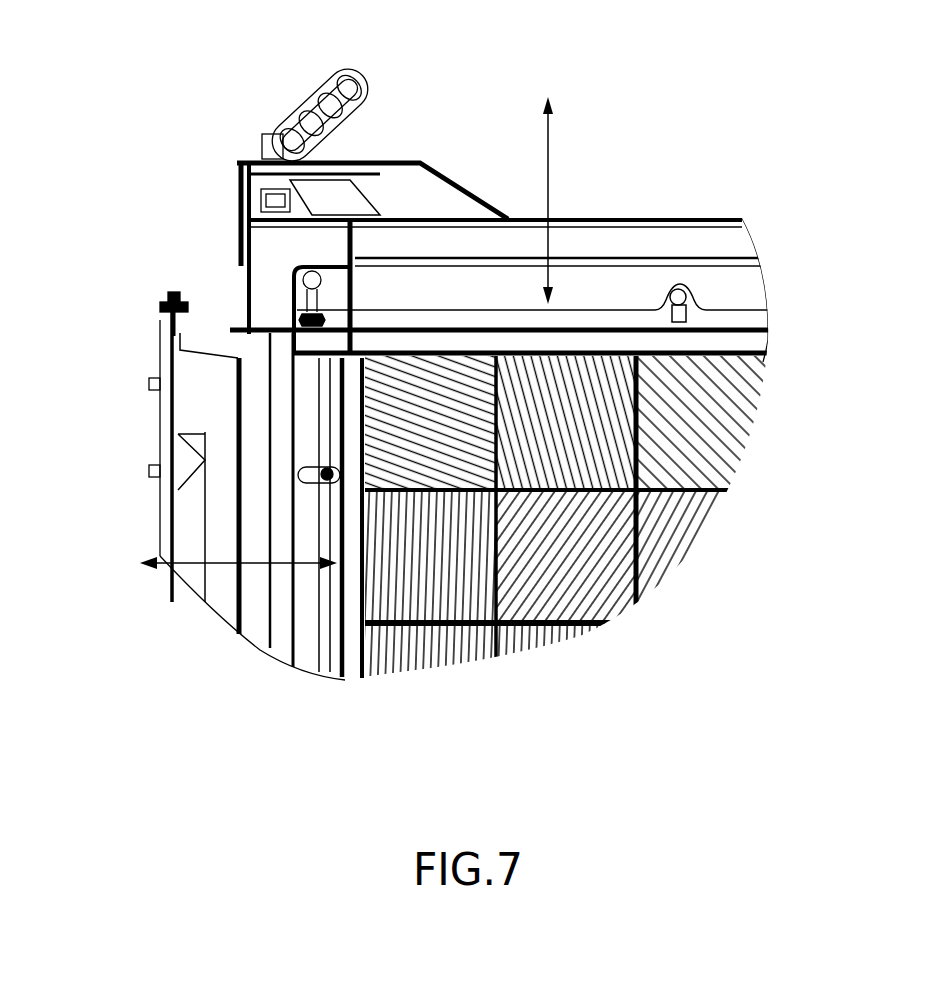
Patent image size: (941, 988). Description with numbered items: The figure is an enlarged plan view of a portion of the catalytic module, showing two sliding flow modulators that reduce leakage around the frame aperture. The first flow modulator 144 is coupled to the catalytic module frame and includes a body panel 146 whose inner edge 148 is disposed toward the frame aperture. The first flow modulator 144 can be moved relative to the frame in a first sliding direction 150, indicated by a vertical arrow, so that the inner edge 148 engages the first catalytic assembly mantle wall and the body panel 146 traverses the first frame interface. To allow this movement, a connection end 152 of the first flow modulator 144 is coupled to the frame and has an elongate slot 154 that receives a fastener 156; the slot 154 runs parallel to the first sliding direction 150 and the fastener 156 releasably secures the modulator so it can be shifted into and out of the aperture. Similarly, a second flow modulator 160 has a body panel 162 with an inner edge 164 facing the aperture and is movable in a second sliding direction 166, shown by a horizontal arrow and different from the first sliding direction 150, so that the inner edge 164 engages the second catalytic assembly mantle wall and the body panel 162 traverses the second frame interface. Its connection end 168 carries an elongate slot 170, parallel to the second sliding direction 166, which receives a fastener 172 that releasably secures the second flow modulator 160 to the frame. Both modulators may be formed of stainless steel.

The first flow modulator 144 is at (745, 321).
The body panel 146 is at (748, 338).
The inner edge 148 is at (757, 375).
The first sliding direction 150 is at (550, 202).
The connection end 152 is at (460, 323).
The elongate slot 154 is at (680, 324).
The fastener 156 is at (680, 288).
The second flow modulator 160 is at (300, 660).
The body panel 162 is at (334, 656).
The inner edge 164 is at (370, 537).
The second sliding direction 166 is at (220, 568).
The connection end 168 is at (309, 620).
The elongate slot 170 is at (297, 475).
The fastener 172 is at (327, 472).